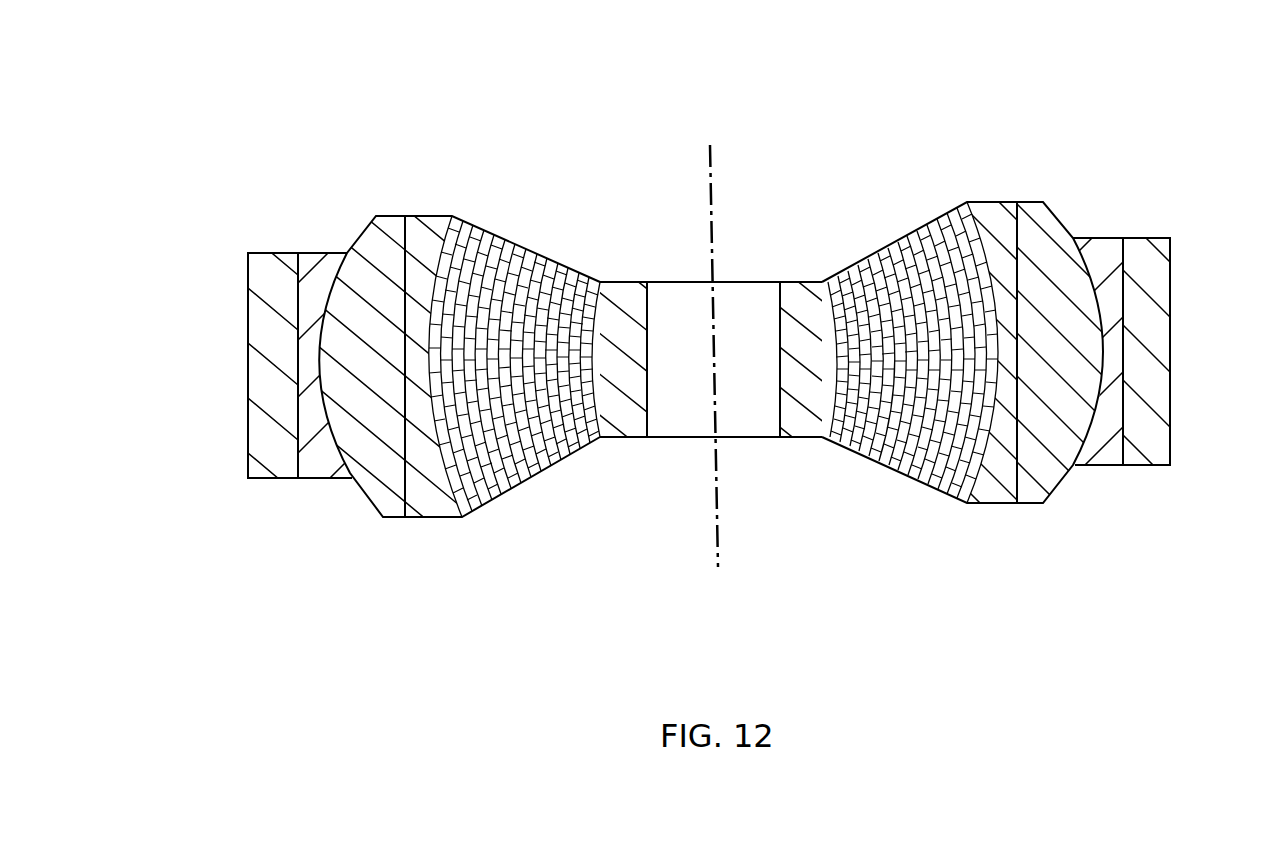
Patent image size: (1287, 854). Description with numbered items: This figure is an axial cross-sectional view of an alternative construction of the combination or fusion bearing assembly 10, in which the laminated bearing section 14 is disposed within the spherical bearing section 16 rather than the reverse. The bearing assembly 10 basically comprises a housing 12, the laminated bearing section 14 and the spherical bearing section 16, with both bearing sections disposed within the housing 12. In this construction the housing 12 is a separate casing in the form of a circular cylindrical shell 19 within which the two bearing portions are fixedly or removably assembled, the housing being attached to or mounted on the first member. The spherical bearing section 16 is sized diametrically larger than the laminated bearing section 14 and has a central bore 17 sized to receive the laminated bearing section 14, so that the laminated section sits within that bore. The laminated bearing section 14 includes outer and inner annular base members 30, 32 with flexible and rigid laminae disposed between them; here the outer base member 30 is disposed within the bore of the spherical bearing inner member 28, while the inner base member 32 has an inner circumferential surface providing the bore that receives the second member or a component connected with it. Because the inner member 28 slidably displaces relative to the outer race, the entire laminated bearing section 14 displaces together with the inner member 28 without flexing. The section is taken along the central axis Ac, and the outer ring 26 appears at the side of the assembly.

The bearing assembly 10 is at (353, 128).
The housing 12 is at (1180, 347).
The laminated bearing section 14 is at (544, 224).
The spherical bearing section 16 is at (1094, 516).
The central bore 17 is at (667, 420).
The circular cylindrical shell 19 is at (270, 390).
The retaining ring 26 is at (1108, 247).
The inner member 28 is at (1052, 217).
The outer base member 30 is at (992, 208).
The inner base member 32 is at (805, 283).
The central axis Ac is at (712, 165).